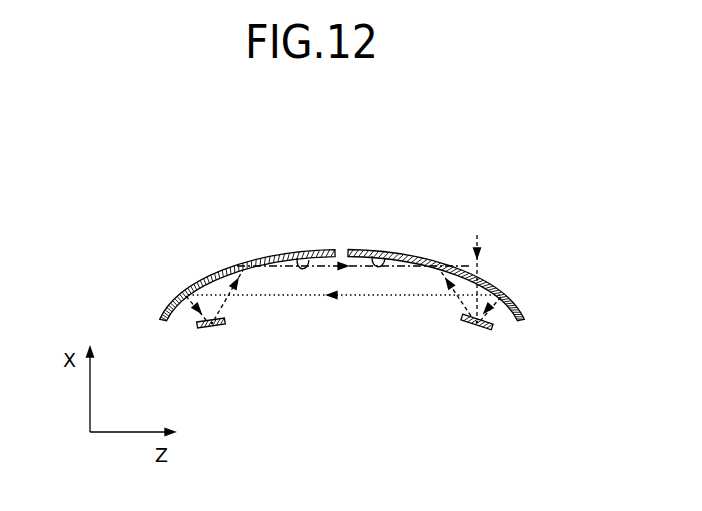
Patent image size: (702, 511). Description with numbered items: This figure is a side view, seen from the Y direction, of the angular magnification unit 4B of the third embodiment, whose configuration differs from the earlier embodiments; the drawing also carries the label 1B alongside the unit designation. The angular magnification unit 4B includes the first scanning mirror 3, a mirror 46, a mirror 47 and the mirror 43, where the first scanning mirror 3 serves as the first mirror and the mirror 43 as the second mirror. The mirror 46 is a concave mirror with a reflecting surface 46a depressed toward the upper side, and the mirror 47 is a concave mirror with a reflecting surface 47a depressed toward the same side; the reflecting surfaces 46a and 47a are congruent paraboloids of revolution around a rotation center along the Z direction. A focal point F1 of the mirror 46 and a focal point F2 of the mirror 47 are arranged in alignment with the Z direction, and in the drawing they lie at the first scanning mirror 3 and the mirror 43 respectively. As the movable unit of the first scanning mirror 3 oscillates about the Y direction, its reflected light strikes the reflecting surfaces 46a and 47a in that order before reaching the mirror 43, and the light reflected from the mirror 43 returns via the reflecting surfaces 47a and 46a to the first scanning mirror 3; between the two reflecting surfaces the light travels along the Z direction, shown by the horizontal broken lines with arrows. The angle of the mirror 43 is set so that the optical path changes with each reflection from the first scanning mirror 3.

The angular magnification unit 4B is at (447, 128).
The vehicle lamp 1B is at (342, 252).
The mirror 47 is at (223, 258).
The reflecting surface 47a is at (297, 256).
The reflecting surface 46a is at (372, 254).
The mirror 46 is at (459, 258).
The mirror 43 is at (203, 328).
The first scanning mirror 3 is at (483, 330).
The focal point F2 is at (213, 327).
The focal point F1 is at (477, 327).